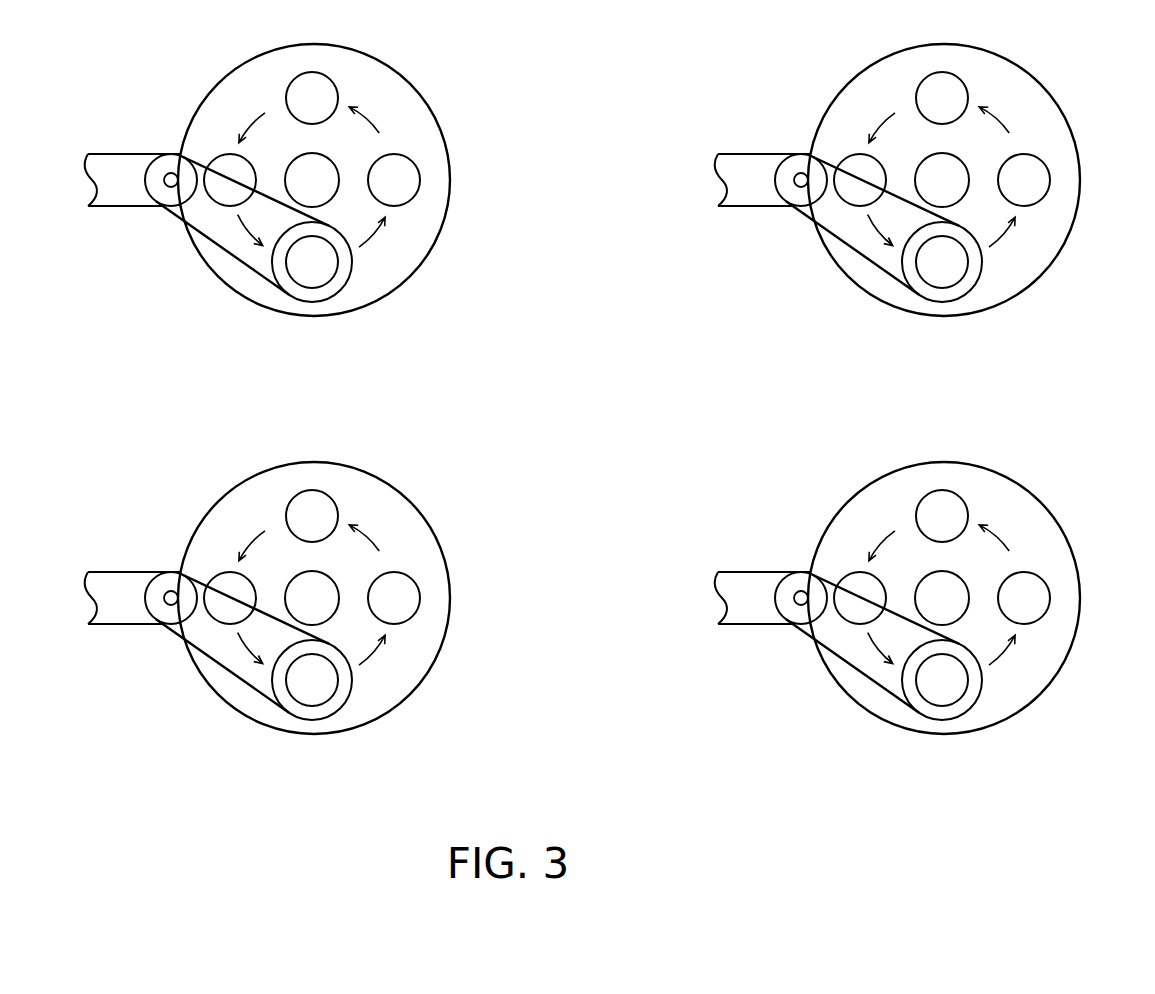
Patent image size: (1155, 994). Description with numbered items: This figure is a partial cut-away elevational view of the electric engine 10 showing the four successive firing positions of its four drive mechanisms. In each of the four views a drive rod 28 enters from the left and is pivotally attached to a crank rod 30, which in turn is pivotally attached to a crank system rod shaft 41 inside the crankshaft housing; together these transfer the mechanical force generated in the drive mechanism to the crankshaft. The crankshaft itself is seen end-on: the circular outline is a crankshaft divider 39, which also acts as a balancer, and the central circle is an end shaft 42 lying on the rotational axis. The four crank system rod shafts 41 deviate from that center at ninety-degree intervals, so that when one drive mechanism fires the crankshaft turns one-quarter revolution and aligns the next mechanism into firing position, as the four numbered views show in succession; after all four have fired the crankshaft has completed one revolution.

The electric engine 10 is at (578, 72).
The drive rod 28 is at (110, 200).
The crank rod 30 is at (225, 253).
The crankshaft divider 39 is at (423, 103).
The crank system rod shaft 41 is at (327, 282).
The end shaft 42 is at (302, 152).